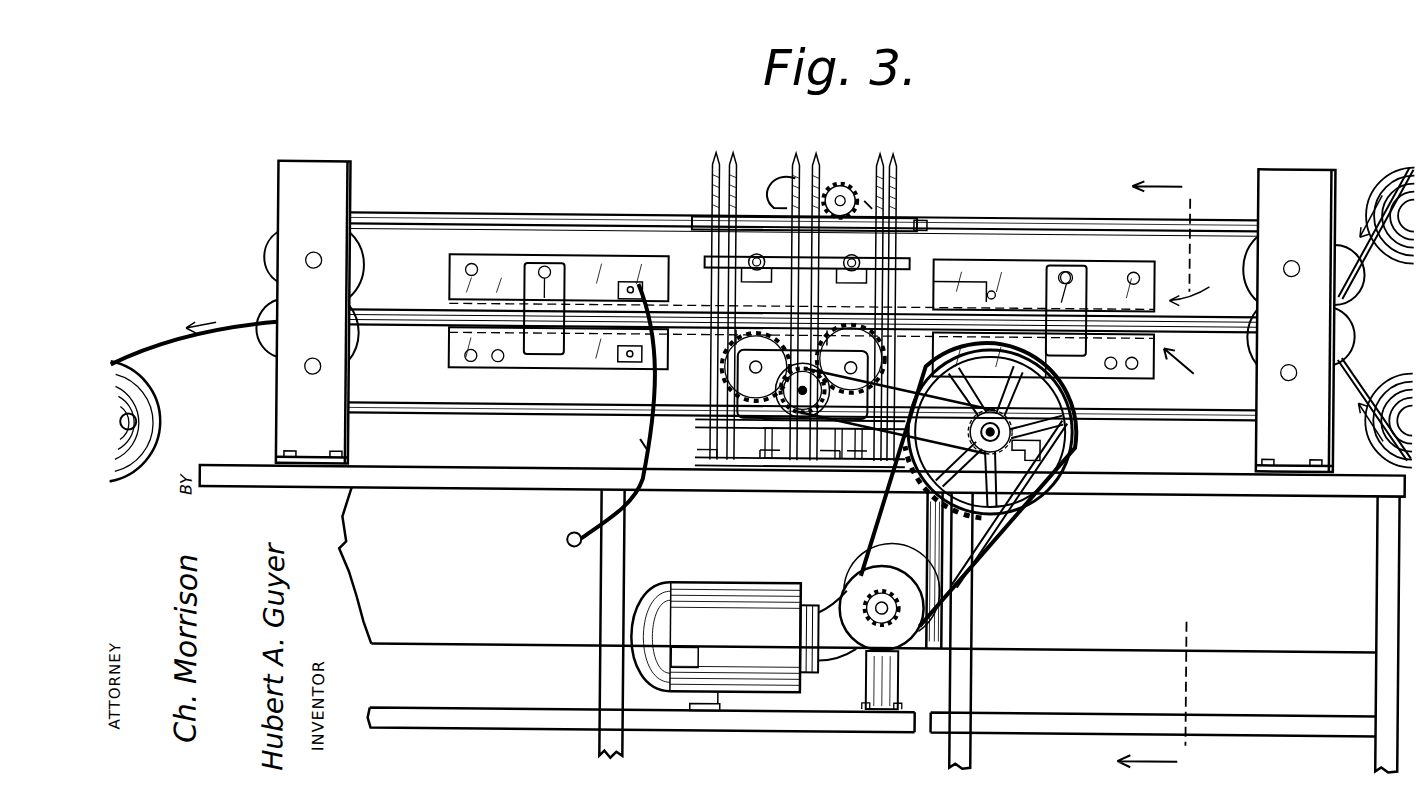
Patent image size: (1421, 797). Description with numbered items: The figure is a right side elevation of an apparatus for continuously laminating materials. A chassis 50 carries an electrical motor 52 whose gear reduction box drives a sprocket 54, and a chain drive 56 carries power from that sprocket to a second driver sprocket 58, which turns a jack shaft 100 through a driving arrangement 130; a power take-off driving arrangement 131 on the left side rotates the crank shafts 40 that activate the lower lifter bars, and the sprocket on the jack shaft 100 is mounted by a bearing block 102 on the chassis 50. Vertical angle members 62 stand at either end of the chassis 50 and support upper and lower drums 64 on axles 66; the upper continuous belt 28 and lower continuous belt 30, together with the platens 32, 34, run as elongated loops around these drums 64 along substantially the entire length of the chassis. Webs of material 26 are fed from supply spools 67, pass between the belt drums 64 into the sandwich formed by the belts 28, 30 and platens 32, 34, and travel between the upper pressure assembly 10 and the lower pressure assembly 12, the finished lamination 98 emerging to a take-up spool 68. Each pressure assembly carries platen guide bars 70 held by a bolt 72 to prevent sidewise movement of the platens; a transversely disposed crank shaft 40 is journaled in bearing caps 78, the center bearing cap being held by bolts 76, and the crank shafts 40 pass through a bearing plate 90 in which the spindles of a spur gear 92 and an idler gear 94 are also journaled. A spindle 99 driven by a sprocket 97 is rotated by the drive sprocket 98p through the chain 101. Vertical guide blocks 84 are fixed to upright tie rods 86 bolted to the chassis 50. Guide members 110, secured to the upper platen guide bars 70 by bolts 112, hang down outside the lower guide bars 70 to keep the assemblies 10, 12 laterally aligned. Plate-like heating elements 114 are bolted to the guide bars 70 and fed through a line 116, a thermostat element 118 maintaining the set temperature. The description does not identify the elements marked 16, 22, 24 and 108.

The upper pressure assembly 10 is at (1179, 472).
The lower pressure assembly 12 is at (1193, 370).
The side board of table 16 is at (1172, 480).
The operating lever 22 is at (628, 415).
The guide block 24 is at (835, 468).
The webs of material 26 is at (1348, 355).
The upper continuous belt 28 is at (406, 230).
The lower continuous belt 30 is at (373, 330).
The upper platen 32 is at (804, 248).
The lower platen 34 is at (427, 335).
The crank shaft 40 is at (849, 252).
The chassis 50 is at (1388, 573).
The electrical motor 52 is at (730, 605).
The sprocket 54 is at (886, 590).
The chain drive 56 is at (993, 548).
The second driver sprocket 58 is at (1032, 500).
The vertical angle members 62 is at (290, 446).
The drums 64 is at (265, 338).
The axles 66 is at (312, 272).
The supply spools 67 is at (1393, 162).
The take-up spool 68 is at (170, 423).
The platen guide bars 70 is at (1024, 270).
The bolt 72 is at (471, 268).
The bolts 76 is at (733, 330).
The bearing caps 78 is at (751, 245).
The vertical guide blocks 84 is at (912, 230).
The tie rods 86 is at (714, 158).
The bearing plate 90 is at (866, 202).
The spur gear 92 is at (836, 192).
The idler gear 94 is at (791, 470).
The sprocket 97 is at (788, 397).
The lamination 98 is at (190, 345).
The drive sprocket 98p is at (1067, 432).
The spindle 99 is at (803, 363).
The jack shaft 100 is at (1068, 460).
The chain 101 is at (954, 404).
The bearing block 102 is at (986, 414).
The link 108 is at (826, 328).
The guide members 110 is at (547, 270).
The bolts 112 is at (805, 310).
The heating elements 114 is at (684, 290).
The line 116 is at (640, 445).
The thermostat element 118 is at (770, 175).
The driving arrangement 130 is at (1031, 544).
The driving arrangement 131 is at (858, 468).